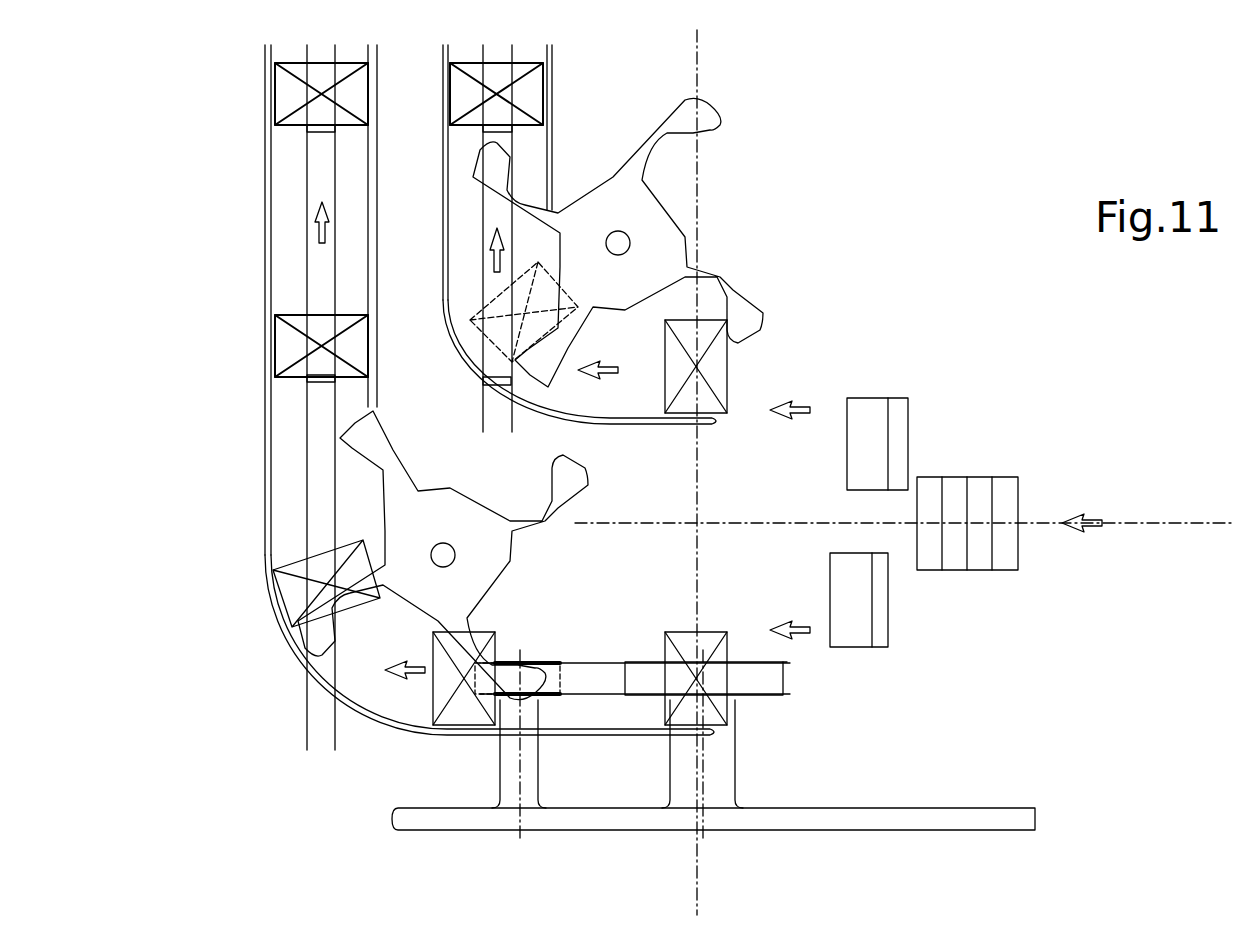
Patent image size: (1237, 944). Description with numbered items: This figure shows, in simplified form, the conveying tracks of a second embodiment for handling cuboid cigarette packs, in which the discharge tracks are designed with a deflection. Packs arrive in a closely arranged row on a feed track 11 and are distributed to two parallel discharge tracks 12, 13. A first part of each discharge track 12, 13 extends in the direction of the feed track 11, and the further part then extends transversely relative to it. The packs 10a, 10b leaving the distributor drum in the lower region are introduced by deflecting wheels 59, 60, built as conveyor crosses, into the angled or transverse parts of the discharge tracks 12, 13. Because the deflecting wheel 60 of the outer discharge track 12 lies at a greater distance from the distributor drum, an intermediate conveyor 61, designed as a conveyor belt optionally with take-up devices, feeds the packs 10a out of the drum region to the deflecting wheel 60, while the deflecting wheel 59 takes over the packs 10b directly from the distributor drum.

The pack 10a is at (853, 625).
The pack 10b is at (860, 433).
The feed track 11 is at (1025, 503).
The discharge track 12 is at (258, 430).
The discharge track 13 is at (568, 100).
The deflecting wheel 59 is at (648, 230).
The deflecting wheel 60 is at (413, 590).
The intermediate conveyor 61 is at (595, 707).